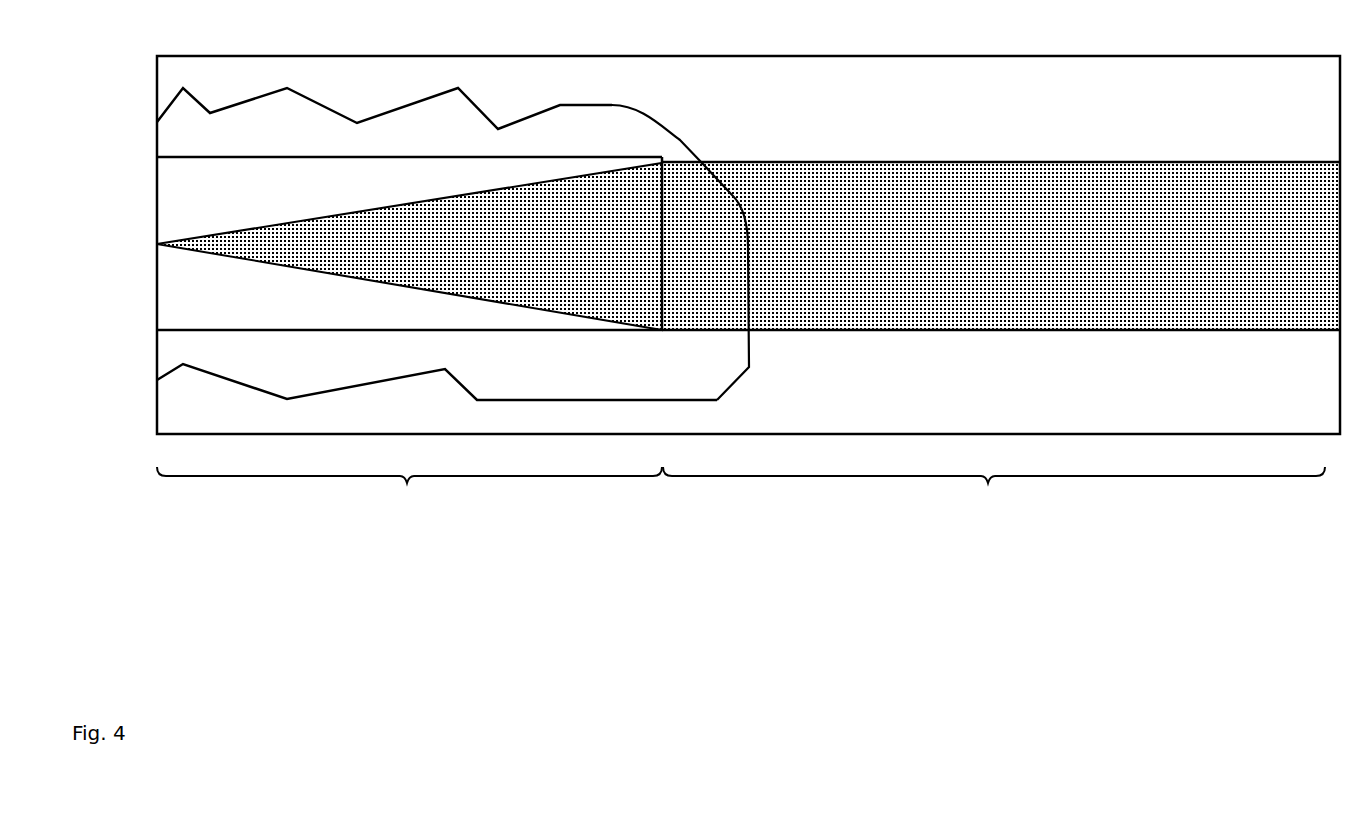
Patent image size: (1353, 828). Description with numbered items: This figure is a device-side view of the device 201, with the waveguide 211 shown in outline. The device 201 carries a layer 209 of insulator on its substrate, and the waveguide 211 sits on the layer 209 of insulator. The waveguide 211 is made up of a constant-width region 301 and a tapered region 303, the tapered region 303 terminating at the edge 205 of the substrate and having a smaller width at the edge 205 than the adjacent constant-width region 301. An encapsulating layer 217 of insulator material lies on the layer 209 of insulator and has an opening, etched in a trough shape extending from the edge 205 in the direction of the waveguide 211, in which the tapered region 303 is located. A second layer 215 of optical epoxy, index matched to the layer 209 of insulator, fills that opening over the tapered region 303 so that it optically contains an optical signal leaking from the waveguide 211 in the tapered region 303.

The device 201 is at (247, 539).
The edge 205 is at (157, 220).
The layer of insulator 209 is at (167, 167).
The waveguide 211 is at (235, 257).
The second layer of optical epoxy 215 is at (459, 141).
The encapsulating layer of insulator material 217 is at (838, 142).
The constant-width region 301 is at (994, 492).
The tapered region 303 is at (409, 490).